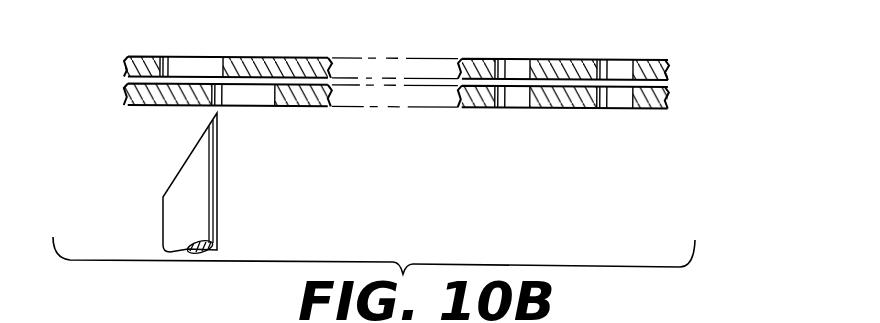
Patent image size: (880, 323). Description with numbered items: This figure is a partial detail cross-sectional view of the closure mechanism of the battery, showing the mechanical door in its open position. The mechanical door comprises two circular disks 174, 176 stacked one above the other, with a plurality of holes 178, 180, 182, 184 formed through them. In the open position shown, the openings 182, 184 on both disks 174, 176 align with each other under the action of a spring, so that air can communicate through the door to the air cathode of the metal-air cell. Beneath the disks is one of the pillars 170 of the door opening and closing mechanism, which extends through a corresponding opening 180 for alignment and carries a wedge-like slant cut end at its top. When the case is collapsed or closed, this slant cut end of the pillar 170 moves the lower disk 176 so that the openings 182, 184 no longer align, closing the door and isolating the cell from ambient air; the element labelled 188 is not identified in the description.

The pillar 170 is at (210, 185).
The circular disk 174 is at (305, 63).
The circular disk 176 is at (307, 106).
The hole 178 is at (188, 65).
The opening 180 is at (233, 102).
The opening 182 is at (613, 63).
The opening 184 is at (613, 107).
The blade 188 is at (188, 155).